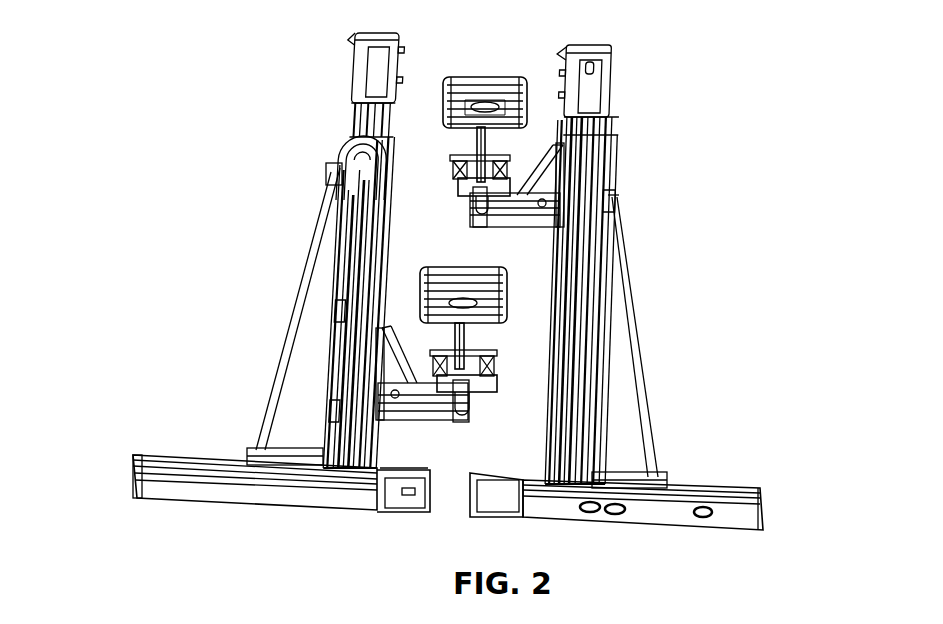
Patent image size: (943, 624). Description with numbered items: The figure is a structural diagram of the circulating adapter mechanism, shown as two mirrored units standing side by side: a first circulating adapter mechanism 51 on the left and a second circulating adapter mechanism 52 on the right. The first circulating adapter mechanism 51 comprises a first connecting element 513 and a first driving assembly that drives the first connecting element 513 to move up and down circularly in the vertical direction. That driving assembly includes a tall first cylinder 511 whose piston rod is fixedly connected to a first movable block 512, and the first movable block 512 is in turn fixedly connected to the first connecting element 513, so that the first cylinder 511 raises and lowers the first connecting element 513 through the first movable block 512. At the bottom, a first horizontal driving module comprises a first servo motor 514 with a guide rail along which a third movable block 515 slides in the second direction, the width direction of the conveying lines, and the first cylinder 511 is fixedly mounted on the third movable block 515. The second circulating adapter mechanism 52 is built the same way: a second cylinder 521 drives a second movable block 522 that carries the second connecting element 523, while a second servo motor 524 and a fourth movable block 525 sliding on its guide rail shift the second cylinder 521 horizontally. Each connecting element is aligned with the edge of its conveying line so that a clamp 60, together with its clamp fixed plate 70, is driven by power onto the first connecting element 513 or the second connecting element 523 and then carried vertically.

The first circulating adapter mechanism 51 is at (330, 193).
The first cylinder 511 is at (355, 53).
The first movable block 512 is at (378, 420).
The first connecting element 513 is at (470, 388).
The first servo motor 514 is at (265, 496).
The third movable block 515 is at (250, 452).
The second circulating adapter mechanism 52 is at (625, 214).
The second cylinder 521 is at (612, 88).
The second movable block 522 is at (650, 200).
The second connecting element 523 is at (457, 200).
The second servo motor 524 is at (762, 500).
The fourth movable block 525 is at (665, 482).
The clamp 60 is at (497, 80).
The clamp fixed plate 70 is at (460, 150).